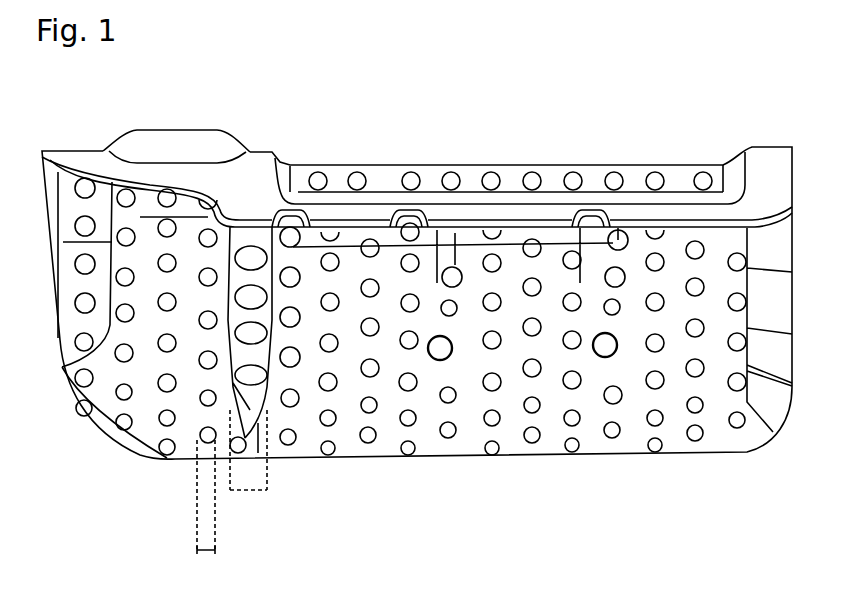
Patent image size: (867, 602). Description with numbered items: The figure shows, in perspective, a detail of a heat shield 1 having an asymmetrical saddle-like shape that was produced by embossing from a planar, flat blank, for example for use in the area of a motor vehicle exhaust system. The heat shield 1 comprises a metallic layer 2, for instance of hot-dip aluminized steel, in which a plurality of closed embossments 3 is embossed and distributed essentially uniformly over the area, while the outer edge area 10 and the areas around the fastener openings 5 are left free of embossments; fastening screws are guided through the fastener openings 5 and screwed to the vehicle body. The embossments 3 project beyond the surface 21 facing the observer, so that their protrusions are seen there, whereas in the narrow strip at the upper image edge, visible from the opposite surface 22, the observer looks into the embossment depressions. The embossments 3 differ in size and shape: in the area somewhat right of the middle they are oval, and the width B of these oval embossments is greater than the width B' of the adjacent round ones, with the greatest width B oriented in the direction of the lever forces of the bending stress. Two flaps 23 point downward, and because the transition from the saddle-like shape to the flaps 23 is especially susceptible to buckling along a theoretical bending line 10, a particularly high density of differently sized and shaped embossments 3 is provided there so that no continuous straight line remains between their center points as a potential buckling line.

The heat shield 1 is at (288, 100).
The metallic layer 2 is at (740, 468).
The embossments 3 is at (366, 443).
The fastener openings 5 is at (440, 350).
The outer edge area / theoretical bending line 10 is at (516, 190).
The surface 21 is at (673, 417).
The surface 22 is at (753, 147).
The flaps 23 is at (147, 408).
The width of oval embossments B is at (248, 466).
The width of adjacent embossments B' is at (206, 508).